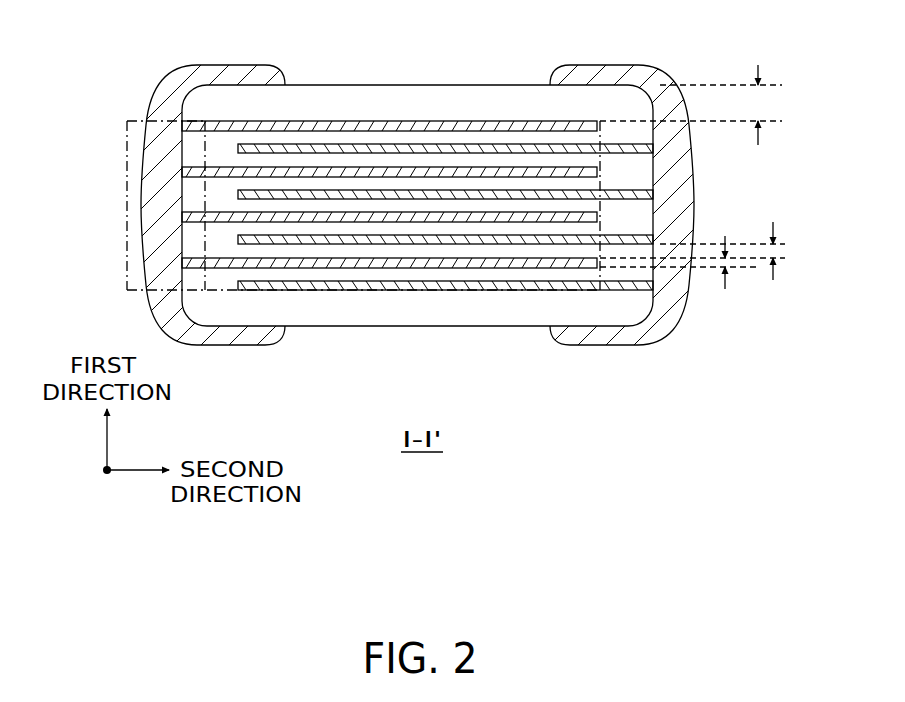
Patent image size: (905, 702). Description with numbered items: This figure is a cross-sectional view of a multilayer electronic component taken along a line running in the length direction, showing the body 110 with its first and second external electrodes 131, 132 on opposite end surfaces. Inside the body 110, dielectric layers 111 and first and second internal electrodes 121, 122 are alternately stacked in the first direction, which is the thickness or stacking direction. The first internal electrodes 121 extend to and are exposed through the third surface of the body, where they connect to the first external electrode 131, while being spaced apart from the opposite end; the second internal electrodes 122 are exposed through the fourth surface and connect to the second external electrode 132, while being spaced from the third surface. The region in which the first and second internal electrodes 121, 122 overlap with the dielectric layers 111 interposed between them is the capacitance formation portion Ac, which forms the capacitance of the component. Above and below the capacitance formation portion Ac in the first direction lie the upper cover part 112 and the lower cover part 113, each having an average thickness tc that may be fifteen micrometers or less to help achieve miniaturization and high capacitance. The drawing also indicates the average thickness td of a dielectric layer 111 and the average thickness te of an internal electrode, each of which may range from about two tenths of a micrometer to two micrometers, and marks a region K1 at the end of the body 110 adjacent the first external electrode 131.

The body 110 is at (375, 86).
The dielectric layer 111 is at (311, 162).
The upper cover part 112 is at (432, 100).
The lower cover part 113 is at (433, 305).
The first internal electrode 121 is at (481, 124).
The second internal electrode 122 is at (531, 149).
The first external electrode 131 is at (158, 173).
The second external electrode 132 is at (667, 177).
The region K1 is at (127, 262).
The capacitance formation portion Ac is at (498, 292).
The average thickness of the cover part tc is at (691, 105).
The average thickness of the dielectric layer td is at (701, 251).
The average thickness of the internal electrode te is at (680, 262).